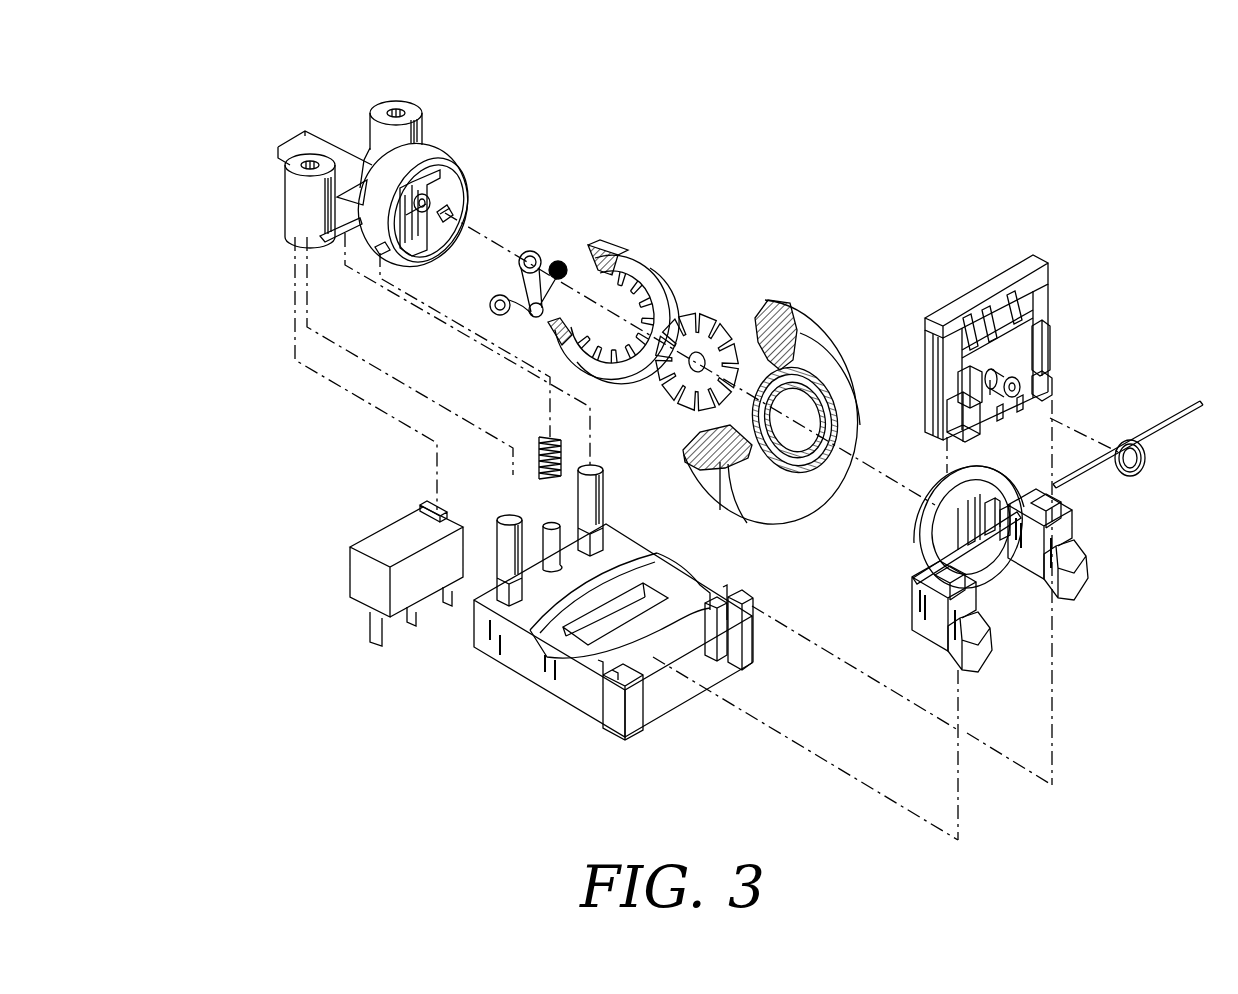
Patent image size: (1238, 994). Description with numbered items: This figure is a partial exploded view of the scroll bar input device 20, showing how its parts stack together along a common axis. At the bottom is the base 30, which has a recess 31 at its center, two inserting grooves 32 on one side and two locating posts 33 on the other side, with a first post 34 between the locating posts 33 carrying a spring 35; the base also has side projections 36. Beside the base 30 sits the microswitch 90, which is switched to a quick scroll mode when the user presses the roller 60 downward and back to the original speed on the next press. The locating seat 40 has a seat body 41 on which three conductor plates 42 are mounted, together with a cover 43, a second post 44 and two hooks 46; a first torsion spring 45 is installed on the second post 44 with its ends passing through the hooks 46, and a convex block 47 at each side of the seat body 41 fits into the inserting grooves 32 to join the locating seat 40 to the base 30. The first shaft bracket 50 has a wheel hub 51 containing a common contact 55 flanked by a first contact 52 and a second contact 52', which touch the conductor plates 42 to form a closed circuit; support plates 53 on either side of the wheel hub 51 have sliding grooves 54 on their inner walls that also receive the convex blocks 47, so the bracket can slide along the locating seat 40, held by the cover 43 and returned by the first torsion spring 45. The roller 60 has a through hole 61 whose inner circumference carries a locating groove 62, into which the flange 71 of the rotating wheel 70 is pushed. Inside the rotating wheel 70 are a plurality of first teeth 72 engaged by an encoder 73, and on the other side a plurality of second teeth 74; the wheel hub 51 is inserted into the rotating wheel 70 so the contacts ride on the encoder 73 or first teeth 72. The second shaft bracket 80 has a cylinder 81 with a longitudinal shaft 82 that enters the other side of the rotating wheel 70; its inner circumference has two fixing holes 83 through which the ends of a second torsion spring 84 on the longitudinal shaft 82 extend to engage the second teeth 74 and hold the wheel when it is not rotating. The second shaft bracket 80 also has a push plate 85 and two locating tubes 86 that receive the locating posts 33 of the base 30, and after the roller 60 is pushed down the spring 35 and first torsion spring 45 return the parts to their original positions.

The scroll bar input device 20 is at (292, 435).
The base 30 is at (517, 663).
The recess 31 is at (670, 583).
The inserting grooves 32 is at (617, 677).
The locating posts 33 is at (508, 543).
The first post 34 is at (547, 547).
The spring 35 is at (548, 437).
The side projections 36 is at (675, 720).
The locating seat 40 is at (992, 252).
The seat body 41 is at (982, 410).
The conductor plates 42 is at (1013, 310).
The cover 43 is at (980, 290).
The second post 44 is at (1020, 387).
The first torsion spring 45 is at (1150, 453).
The hooks 46 is at (1052, 358).
The convex block 47 is at (1043, 290).
The first shaft bracket 50 is at (1115, 548).
The wheel hub 51 is at (918, 560).
The first contact 52 is at (1000, 559).
The second contact 52' is at (990, 606).
The support plates 53 is at (1083, 515).
The sliding groove 54 is at (1010, 553).
The common contact 55 is at (980, 550).
The roller 60 is at (803, 303).
The through hole 61 is at (822, 440).
The locating groove 62 is at (736, 433).
The rotating wheel 70 is at (634, 240).
The flange 71 is at (624, 248).
The first teeth 72 is at (626, 357).
The encoder 73 is at (699, 312).
The second teeth 74 is at (575, 248).
The second shaft bracket 80 is at (389, 82).
The cylinder 81 is at (430, 150).
The longitudinal shaft 82 is at (450, 190).
The fixing holes 83 is at (447, 223).
The second torsion spring 84 is at (535, 243).
The push plate 85 is at (310, 140).
The locating tubes 86 is at (418, 140).
The microswitch 90 is at (400, 527).